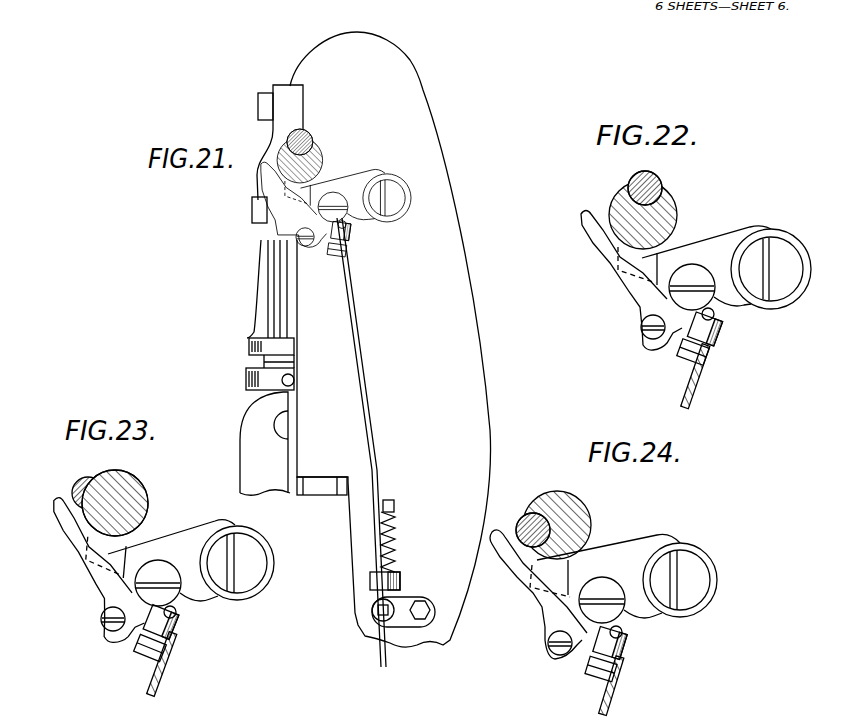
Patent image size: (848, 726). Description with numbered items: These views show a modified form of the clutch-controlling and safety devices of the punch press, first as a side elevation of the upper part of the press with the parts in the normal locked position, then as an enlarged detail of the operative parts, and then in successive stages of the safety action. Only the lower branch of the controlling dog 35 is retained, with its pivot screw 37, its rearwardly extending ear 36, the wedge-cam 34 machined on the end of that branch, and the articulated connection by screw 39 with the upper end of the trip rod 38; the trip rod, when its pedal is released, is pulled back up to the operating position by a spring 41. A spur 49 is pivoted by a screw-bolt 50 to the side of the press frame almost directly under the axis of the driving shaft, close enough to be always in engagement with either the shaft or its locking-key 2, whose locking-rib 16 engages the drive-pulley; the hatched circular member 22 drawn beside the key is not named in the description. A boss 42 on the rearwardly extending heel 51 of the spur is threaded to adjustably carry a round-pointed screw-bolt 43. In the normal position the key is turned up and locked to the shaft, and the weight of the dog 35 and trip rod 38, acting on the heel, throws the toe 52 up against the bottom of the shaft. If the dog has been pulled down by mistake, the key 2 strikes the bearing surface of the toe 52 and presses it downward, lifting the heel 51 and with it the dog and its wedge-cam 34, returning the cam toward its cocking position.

In FIG. 21, the locking-key 2 is at (305, 155).
In FIG. 22, the locking-key 2 is at (608, 179).
In FIG. 23, the locking-key 2 is at (121, 464).
In FIG. 24, the locking-key 2 is at (542, 483).
In FIG. 21, the locking-rib 16 is at (294, 128).
In FIG. 22, the locking-rib 16 is at (660, 181).
In FIG. 23, the locking-rib 16 is at (71, 488).
In FIG. 24, the locking-rib 16 is at (525, 514).
In FIG. 21, the roller 22 is at (313, 160).
In FIG. 22, the roller 22 is at (663, 215).
In FIG. 23, the roller 22 is at (134, 503).
In FIG. 24, the roller 22 is at (571, 524).
In FIG. 21, the wedge-cam 34 is at (343, 176).
In FIG. 22, the wedge-cam 34 is at (706, 234).
In FIG. 23, the wedge-cam 34 is at (171, 535).
In FIG. 24, the wedge-cam 34 is at (608, 553).
In FIG. 21, the controlling dog 35 is at (365, 179).
In FIG. 22, the controlling dog 35 is at (732, 301).
In FIG. 23, the controlling dog 35 is at (198, 547).
In FIG. 24, the controlling dog 35 is at (640, 567).
In FIG. 21, the ear 36 is at (398, 197).
In FIG. 22, the ear 36 is at (778, 258).
In FIG. 23, the ear 36 is at (245, 552).
In FIG. 24, the ear 36 is at (694, 573).
In FIG. 21, the screw 37 is at (400, 184).
In FIG. 22, the screw 37 is at (763, 247).
In FIG. 23, the screw 37 is at (232, 543).
In FIG. 24, the screw 37 is at (680, 559).
In FIG. 21, the trip rod 38 is at (363, 390).
In FIG. 21, the screw 39 is at (352, 220).
In FIG. 22, the screw 39 is at (697, 275).
In FIG. 23, the screw 39 is at (163, 574).
In FIG. 24, the screw 39 is at (610, 588).
In FIG. 21, the spring 41 is at (391, 553).
In FIG. 21, the boss 42 is at (360, 243).
In FIG. 22, the boss 42 is at (721, 327).
In FIG. 23, the boss 42 is at (184, 622).
In FIG. 24, the boss 42 is at (630, 643).
In FIG. 21, the round-pointed screw-bolt 43 is at (357, 262).
In FIG. 22, the round-pointed screw-bolt 43 is at (712, 374).
In FIG. 23, the round-pointed screw-bolt 43 is at (170, 664).
In FIG. 24, the round-pointed screw-bolt 43 is at (623, 686).
In FIG. 21, the spur 49 is at (305, 213).
In FIG. 22, the spur 49 is at (650, 304).
In FIG. 23, the spur 49 is at (112, 593).
In FIG. 24, the spur 49 is at (558, 614).
In FIG. 21, the screw-bolt 50 is at (269, 241).
In FIG. 22, the screw-bolt 50 is at (627, 335).
In FIG. 23, the screw-bolt 50 is at (94, 630).
In FIG. 24, the screw-bolt 50 is at (540, 650).
In FIG. 21, the heel 51 is at (311, 266).
In FIG. 22, the heel 51 is at (657, 347).
In FIG. 23, the heel 51 is at (120, 646).
In FIG. 24, the heel 51 is at (565, 662).
In FIG. 21, the toe 52 is at (266, 204).
In FIG. 22, the toe 52 is at (614, 281).
In FIG. 23, the toe 52 is at (88, 571).
In FIG. 24, the toe 52 is at (515, 594).